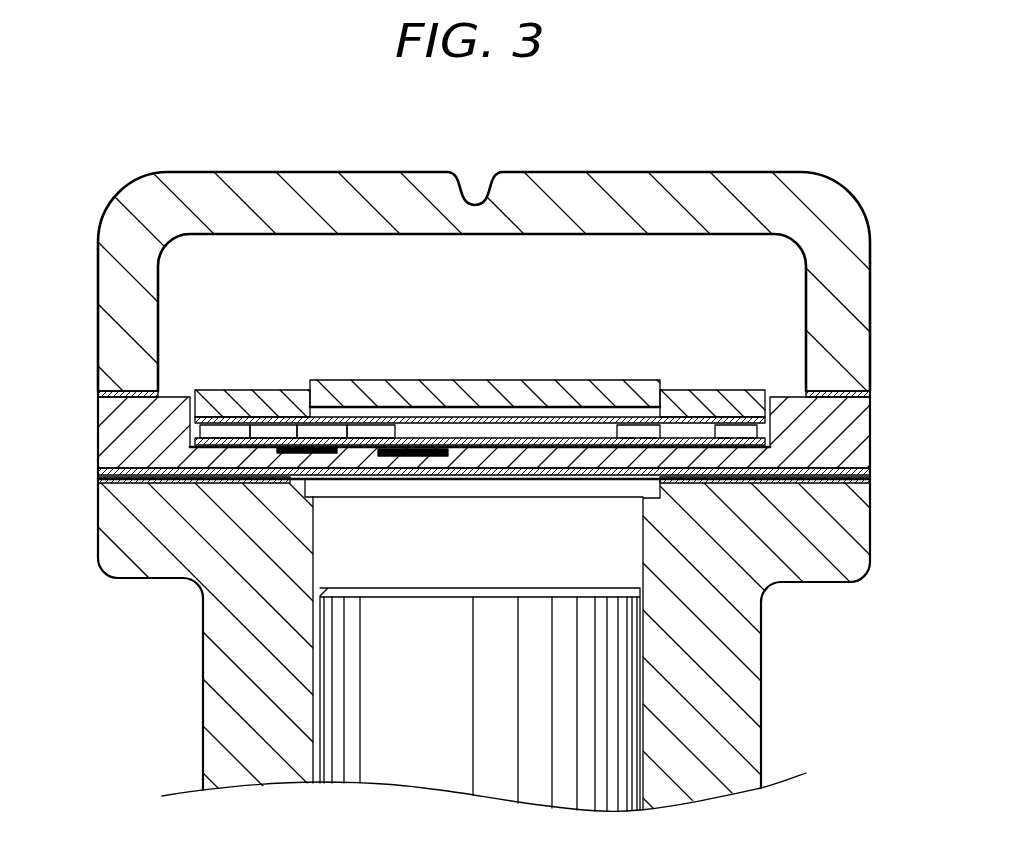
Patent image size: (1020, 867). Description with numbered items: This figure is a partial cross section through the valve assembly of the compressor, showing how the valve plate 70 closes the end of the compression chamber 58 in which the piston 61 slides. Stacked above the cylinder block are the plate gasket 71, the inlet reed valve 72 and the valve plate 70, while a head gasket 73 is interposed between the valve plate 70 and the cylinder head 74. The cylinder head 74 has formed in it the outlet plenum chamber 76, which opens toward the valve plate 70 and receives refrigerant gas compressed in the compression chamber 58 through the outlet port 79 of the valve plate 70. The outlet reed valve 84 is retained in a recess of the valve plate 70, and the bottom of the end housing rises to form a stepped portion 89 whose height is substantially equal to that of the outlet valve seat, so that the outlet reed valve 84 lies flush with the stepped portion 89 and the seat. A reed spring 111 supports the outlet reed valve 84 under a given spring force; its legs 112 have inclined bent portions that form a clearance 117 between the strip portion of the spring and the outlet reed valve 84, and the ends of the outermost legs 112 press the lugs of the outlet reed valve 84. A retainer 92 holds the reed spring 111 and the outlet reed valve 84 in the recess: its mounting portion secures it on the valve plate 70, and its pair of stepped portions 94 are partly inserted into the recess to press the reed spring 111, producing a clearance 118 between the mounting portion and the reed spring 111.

The cylinder head 74 is at (197, 190).
The outlet plenum chamber 76 is at (418, 256).
The head gasket 73 is at (125, 392).
The valve plate 70 is at (120, 425).
The inlet reed valve 72 is at (128, 467).
The plate gasket 71 is at (115, 487).
The stepped portion 89 is at (190, 557).
The stepped portions 94 is at (212, 400).
The retainer 92 is at (340, 388).
The reed spring 111 is at (392, 400).
The clearance 117 is at (452, 407).
The clearance 118 is at (525, 407).
The legs 112 is at (298, 425).
The outlet port 79 is at (415, 458).
The outlet reed valve 84 is at (345, 455).
The compression chamber 58 is at (495, 570).
The piston 61 is at (540, 745).